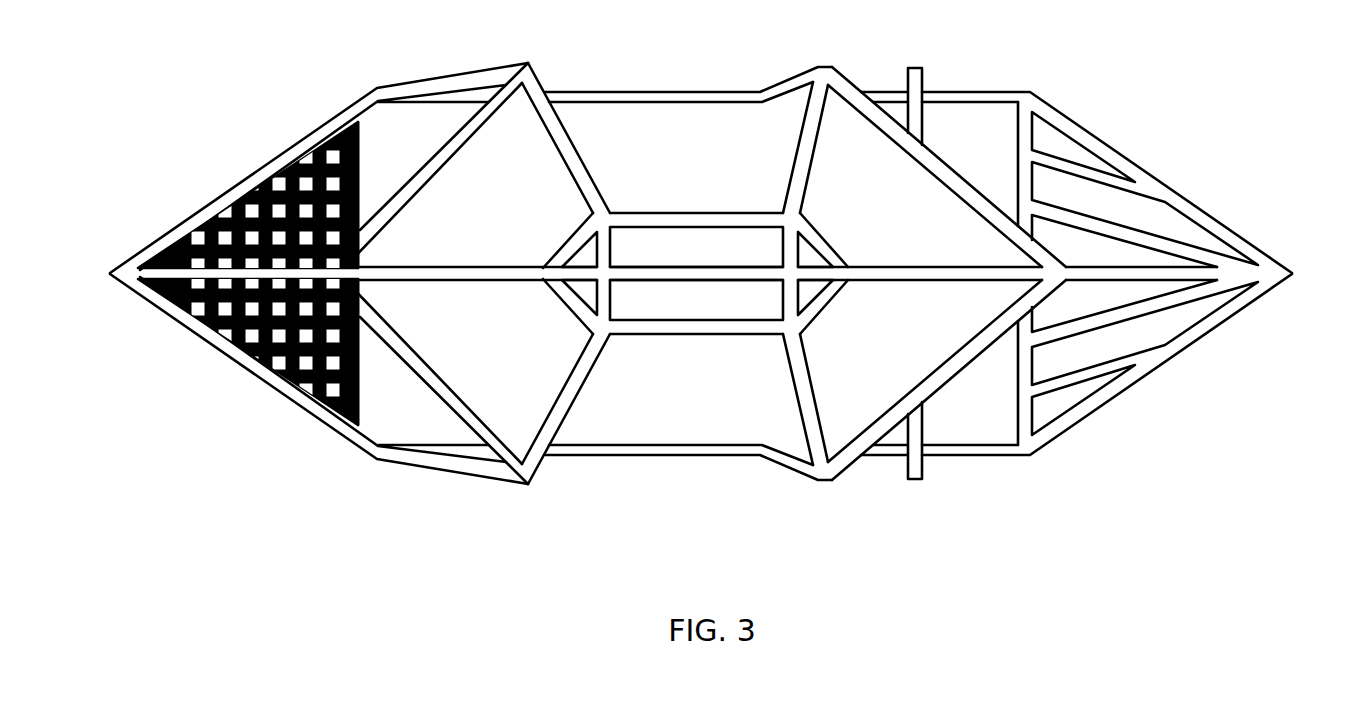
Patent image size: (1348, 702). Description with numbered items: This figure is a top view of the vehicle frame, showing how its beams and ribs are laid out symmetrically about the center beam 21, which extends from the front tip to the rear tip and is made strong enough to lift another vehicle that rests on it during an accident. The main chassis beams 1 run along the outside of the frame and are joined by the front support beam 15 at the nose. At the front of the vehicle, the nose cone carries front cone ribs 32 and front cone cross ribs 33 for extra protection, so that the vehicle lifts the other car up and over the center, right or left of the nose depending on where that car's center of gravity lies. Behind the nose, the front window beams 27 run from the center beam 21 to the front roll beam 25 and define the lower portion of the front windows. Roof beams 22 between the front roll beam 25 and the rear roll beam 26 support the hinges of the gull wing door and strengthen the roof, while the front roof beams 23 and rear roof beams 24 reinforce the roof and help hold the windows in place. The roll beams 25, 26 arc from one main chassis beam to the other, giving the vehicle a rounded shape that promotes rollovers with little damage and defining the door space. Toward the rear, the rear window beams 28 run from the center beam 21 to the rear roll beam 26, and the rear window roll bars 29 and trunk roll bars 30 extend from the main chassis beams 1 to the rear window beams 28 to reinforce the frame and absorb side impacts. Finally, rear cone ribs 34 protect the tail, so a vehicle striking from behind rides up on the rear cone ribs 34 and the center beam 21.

The main chassis beams 1 is at (697, 521).
The front support beam 15 is at (453, 521).
The center beam 21 is at (434, 277).
The roof beams 22 is at (697, 372).
The front roof beams 23 is at (570, 307).
The rear roof beams 24 is at (830, 252).
The front roll beam 25 is at (620, 412).
The rear roll beam 26 is at (781, 521).
The front window beam 27 is at (484, 359).
The rear window beam 28 is at (958, 359).
The rear window roll bars 29 is at (918, 521).
The trunk roll bars 30 is at (1150, 405).
The front cone ribs 32 is at (307, 384).
The front cone cross ribs 33 is at (392, 399).
The rear cone ribs 34 is at (1118, 185).